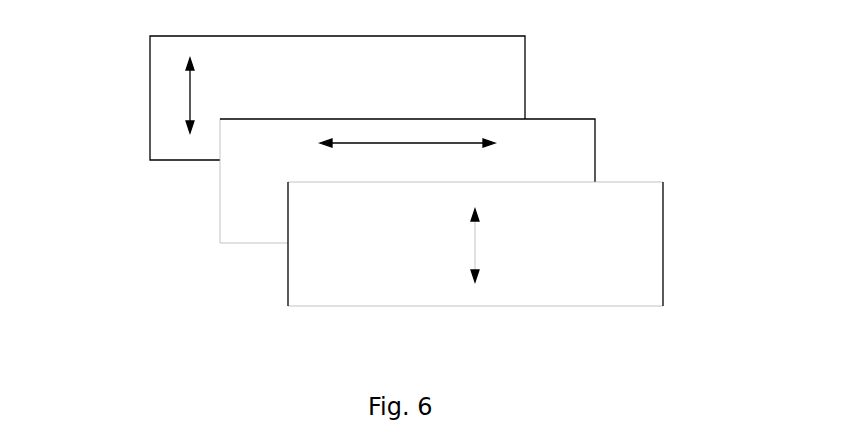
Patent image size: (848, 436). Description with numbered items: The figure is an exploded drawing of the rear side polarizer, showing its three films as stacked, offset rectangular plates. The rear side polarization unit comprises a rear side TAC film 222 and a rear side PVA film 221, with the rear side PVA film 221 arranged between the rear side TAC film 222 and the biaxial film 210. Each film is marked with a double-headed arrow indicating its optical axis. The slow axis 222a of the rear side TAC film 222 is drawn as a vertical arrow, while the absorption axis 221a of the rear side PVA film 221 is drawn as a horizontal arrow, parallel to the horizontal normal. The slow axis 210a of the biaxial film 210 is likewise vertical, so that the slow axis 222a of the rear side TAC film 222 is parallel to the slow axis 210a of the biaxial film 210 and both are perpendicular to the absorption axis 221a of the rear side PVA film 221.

The biaxial film 210 is at (663, 220).
The slow axis of the biaxial film 210a is at (475, 248).
The rear side PVA film 221 is at (595, 132).
The absorption axis of the rear side PVA film 221a is at (320, 143).
The rear side TAC film 222 is at (525, 72).
The slow axis of the rear side TAC film 222a is at (190, 99).